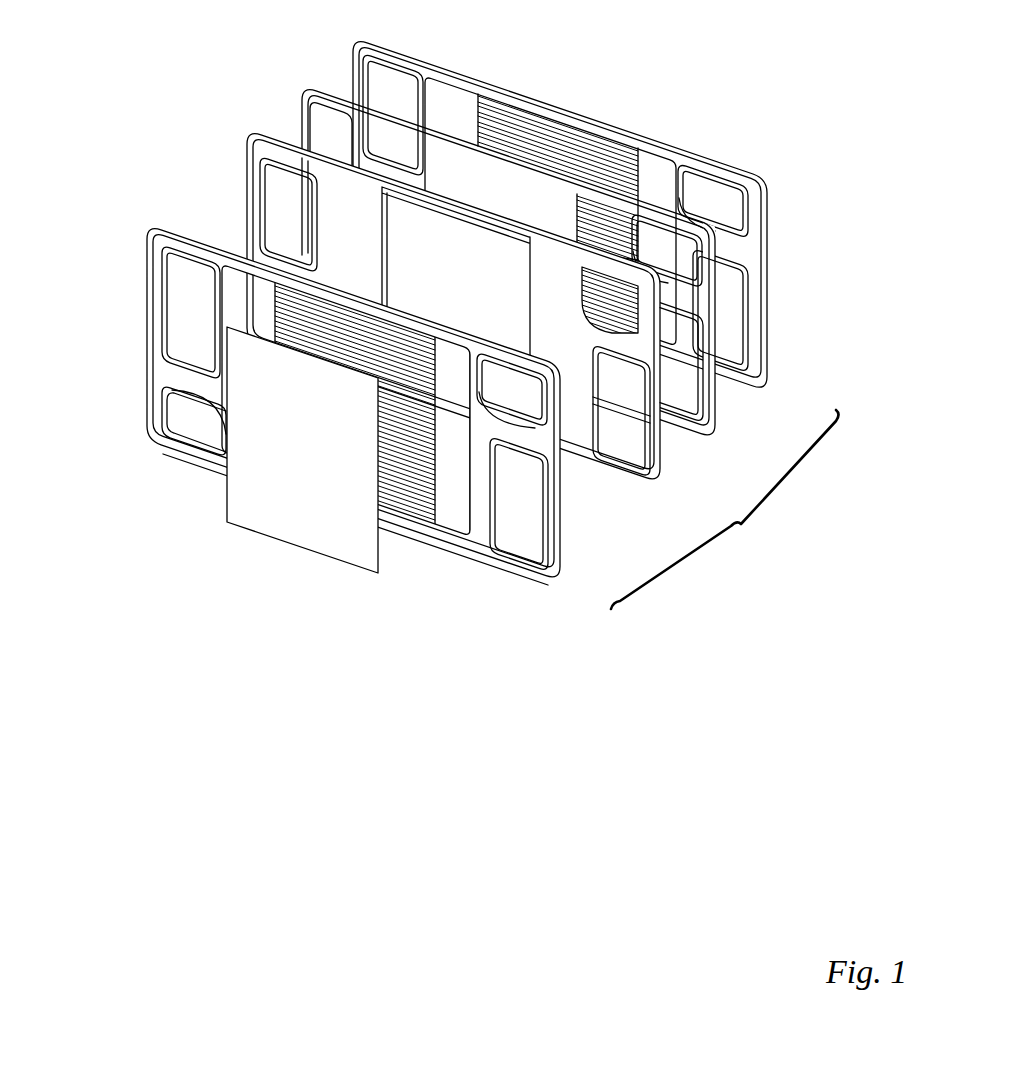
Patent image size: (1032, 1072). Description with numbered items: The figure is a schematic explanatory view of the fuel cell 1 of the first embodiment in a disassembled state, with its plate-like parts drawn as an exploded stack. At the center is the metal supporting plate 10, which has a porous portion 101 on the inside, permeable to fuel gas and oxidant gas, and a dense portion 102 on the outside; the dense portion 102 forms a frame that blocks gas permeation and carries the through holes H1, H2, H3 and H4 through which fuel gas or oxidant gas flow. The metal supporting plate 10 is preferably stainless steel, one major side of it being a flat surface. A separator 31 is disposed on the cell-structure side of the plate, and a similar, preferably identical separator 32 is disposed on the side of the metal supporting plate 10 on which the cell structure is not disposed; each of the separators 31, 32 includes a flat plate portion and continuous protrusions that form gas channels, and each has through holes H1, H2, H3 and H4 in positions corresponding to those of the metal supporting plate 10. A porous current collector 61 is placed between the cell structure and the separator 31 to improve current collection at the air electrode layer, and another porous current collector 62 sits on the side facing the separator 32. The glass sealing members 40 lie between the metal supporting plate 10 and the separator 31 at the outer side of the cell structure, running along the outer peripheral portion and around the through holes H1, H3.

The fuel cell 1 is at (781, 556).
The metal supporting plate 10 is at (662, 486).
The porous portion 101 is at (492, 238).
The dense portion 102 is at (582, 258).
The separator 31 is at (757, 392).
The separator 32 is at (552, 574).
The glass sealing members 40 is at (702, 272).
The porous current collector 61 is at (503, 172).
The porous current collector 62 is at (290, 510).
The through hole H1 is at (190, 425).
The through hole H2 is at (382, 73).
The through hole H3 is at (730, 197).
The through hole H4 is at (745, 322).